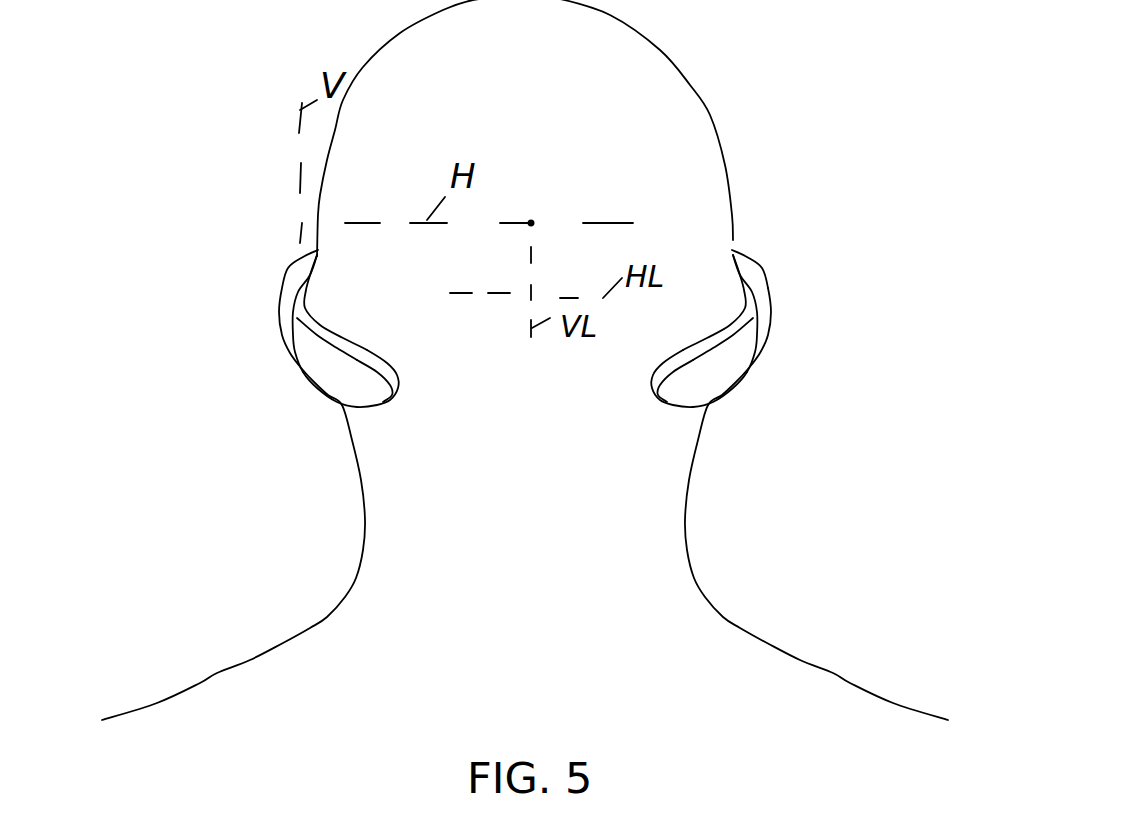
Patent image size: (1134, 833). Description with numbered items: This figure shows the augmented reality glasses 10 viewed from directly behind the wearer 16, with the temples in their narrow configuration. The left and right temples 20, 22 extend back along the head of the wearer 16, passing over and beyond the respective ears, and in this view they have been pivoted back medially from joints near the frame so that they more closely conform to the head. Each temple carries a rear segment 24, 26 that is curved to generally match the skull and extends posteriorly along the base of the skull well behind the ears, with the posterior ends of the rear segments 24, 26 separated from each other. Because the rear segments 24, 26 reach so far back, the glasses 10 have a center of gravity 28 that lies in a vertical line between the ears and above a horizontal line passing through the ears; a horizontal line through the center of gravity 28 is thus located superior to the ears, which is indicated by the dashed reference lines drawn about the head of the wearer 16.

The augmented reality glasses 10 is at (762, 246).
The wearer 16 is at (686, 98).
The left temple 20 is at (302, 312).
The right temple 22 is at (758, 307).
The rear segment 24 is at (363, 390).
The rear segment 26 is at (690, 393).
The center of gravity 28 is at (531, 220).